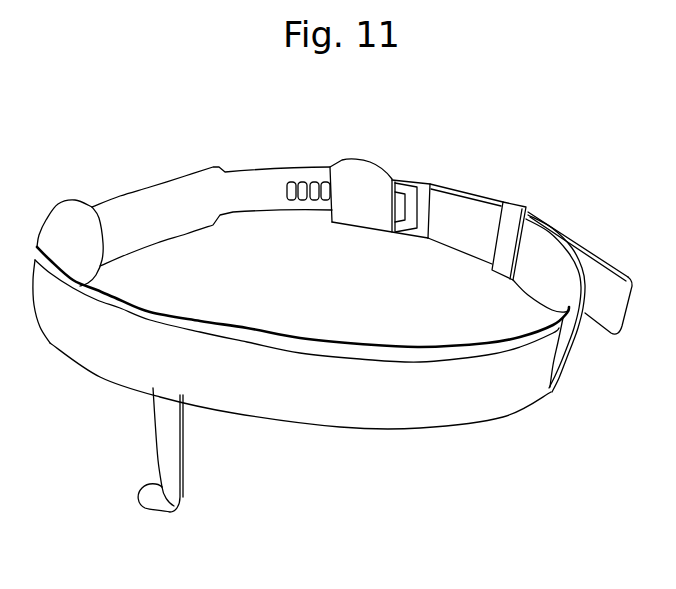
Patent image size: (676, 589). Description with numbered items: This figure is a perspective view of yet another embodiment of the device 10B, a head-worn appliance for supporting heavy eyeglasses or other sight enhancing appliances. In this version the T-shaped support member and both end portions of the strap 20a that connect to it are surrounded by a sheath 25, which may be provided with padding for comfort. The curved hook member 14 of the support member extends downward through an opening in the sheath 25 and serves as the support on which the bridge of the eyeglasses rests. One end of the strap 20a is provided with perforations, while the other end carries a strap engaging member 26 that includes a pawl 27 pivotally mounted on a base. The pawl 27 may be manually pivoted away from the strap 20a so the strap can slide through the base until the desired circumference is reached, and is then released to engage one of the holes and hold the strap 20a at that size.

The device 10B is at (110, 172).
The hook member 14 is at (176, 505).
The strap 20a is at (467, 200).
The sheath 25 is at (508, 400).
The strap engaging member 26 is at (418, 178).
The pawl 27 is at (368, 160).